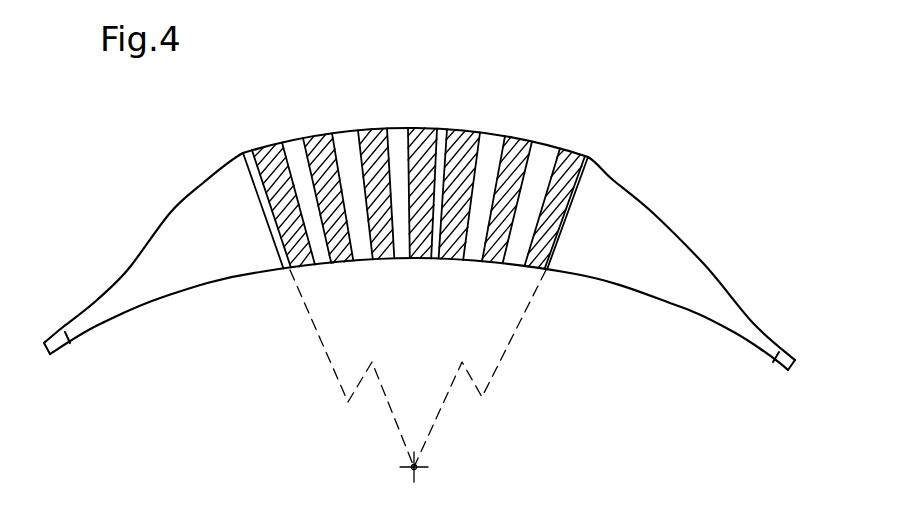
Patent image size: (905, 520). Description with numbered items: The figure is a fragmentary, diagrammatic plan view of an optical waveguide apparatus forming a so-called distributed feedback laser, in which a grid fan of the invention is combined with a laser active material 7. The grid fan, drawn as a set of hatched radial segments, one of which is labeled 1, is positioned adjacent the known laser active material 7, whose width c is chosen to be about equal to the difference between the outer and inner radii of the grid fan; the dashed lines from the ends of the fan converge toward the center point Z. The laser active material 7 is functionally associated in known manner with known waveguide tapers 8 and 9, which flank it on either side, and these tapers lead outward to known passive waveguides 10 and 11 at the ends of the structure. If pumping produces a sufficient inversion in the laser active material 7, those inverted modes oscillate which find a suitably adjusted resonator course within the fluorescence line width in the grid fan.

The belt element 1 is at (470, 167).
The laser active material 7 is at (598, 153).
The waveguide taper 8 is at (188, 230).
The waveguide taper 9 is at (637, 227).
The passive waveguide 10 is at (65, 335).
The passive waveguide 11 is at (776, 350).
The width of the laser active material c is at (437, 194).
The center of curvature Z is at (422, 468).